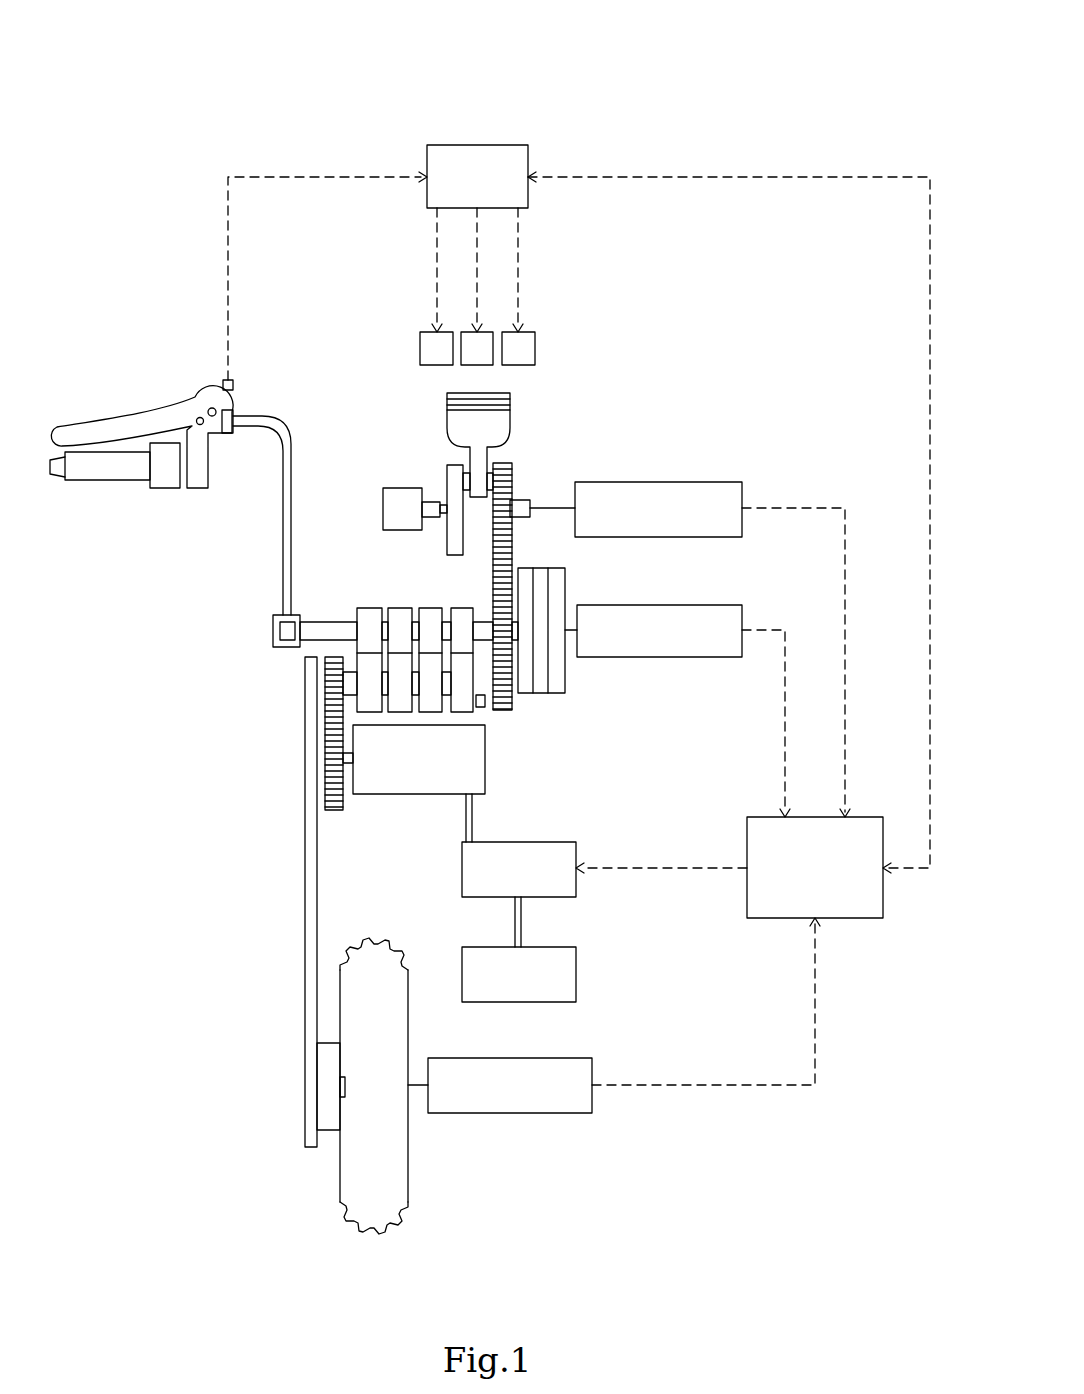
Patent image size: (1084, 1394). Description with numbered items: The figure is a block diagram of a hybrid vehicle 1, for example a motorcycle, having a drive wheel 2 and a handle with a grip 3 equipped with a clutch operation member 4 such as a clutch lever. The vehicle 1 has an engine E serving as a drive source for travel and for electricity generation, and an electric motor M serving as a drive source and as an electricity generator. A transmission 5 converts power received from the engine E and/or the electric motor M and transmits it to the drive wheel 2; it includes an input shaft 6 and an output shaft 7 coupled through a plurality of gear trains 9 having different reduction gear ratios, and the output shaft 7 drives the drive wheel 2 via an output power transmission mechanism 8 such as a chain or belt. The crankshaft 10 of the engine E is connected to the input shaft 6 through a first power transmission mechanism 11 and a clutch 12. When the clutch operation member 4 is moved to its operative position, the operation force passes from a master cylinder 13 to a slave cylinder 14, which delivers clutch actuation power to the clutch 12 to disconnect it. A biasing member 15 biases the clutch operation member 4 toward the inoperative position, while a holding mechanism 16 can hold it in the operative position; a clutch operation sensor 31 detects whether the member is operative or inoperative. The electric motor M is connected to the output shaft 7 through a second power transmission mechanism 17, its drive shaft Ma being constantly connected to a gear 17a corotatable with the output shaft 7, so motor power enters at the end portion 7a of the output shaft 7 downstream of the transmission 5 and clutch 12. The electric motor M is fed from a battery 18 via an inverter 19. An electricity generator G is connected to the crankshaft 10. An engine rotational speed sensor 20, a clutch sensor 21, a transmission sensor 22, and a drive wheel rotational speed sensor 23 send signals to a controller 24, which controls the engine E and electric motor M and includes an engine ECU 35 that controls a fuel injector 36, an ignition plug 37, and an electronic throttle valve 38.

The hybrid vehicle 1 is at (769, 115).
The drive wheel 2 is at (340, 1175).
The grip 3 is at (112, 480).
The clutch operation member 4 is at (115, 430).
The transmission 5 is at (368, 585).
The input shaft 6 is at (330, 620).
The output shaft 7 is at (320, 735).
The end portion 7a is at (320, 690).
The output power transmission mechanism 8 is at (305, 885).
The gear trains 9 is at (435, 606).
The crankshaft 10 is at (525, 500).
The first power transmission mechanism 11 is at (512, 570).
The clutch 12 is at (565, 680).
The master cylinder 13 is at (235, 412).
The slave cylinder 14 is at (273, 628).
The biasing member 15 is at (216, 400).
The holding mechanism 16 is at (200, 418).
The second power transmission mechanism 17 is at (330, 765).
The gear 17a is at (330, 655).
The battery 18 is at (576, 970).
The inverter 19 is at (576, 880).
The engine rotational speed sensor 20 is at (680, 482).
The clutch sensor 21 is at (680, 657).
The transmission sensor 22 is at (485, 705).
The drive wheel rotational speed sensor 23 is at (530, 1113).
The controller 24 is at (866, 927).
The clutch operation sensor 31 is at (233, 382).
The engine ECU 35 is at (470, 145).
The fuel injector 36 is at (430, 332).
The ignition plug 37 is at (483, 332).
The electronic throttle valve 38 is at (525, 332).
The engine E is at (510, 400).
The electricity generator G is at (400, 488).
The electric motor M is at (419, 759).
The drive shaft Ma is at (348, 785).